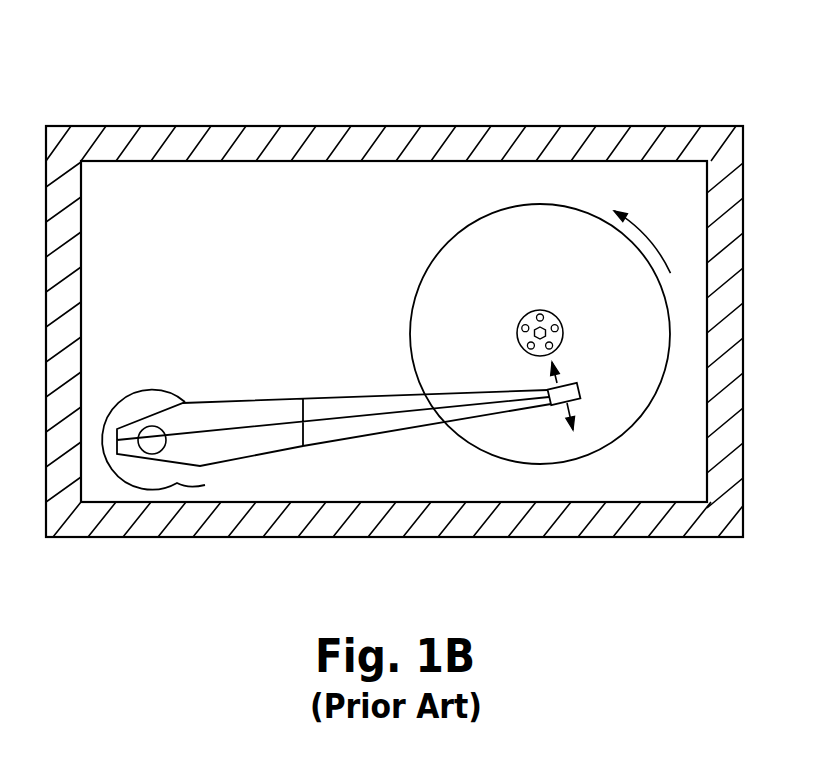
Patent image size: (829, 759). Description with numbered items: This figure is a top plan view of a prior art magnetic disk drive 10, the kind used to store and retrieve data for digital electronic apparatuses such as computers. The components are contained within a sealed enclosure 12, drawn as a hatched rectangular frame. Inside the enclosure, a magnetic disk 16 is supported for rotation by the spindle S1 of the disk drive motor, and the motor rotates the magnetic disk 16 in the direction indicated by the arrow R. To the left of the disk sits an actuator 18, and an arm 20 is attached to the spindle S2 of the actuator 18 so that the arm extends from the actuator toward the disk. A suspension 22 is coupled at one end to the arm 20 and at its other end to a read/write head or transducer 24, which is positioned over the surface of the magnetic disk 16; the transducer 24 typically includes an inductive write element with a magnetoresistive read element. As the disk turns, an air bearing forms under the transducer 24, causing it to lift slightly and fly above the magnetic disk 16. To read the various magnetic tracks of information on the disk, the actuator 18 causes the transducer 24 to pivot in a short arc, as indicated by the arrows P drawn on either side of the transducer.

The magnetic disk drive 10 is at (685, 72).
The sealed enclosure 12 is at (411, 538).
The magnetic disk 16 is at (498, 284).
The actuator 18 is at (145, 402).
The arm 20 is at (222, 405).
The suspension 22 is at (367, 423).
The read/write head or transducer 24 is at (578, 387).
The spindle of motor S1 is at (543, 316).
The spindle of actuator S2 is at (157, 448).
The arrows indicating pivoting of the transducer P is at (574, 387).
The arrow indicating disk rotation R is at (644, 240).